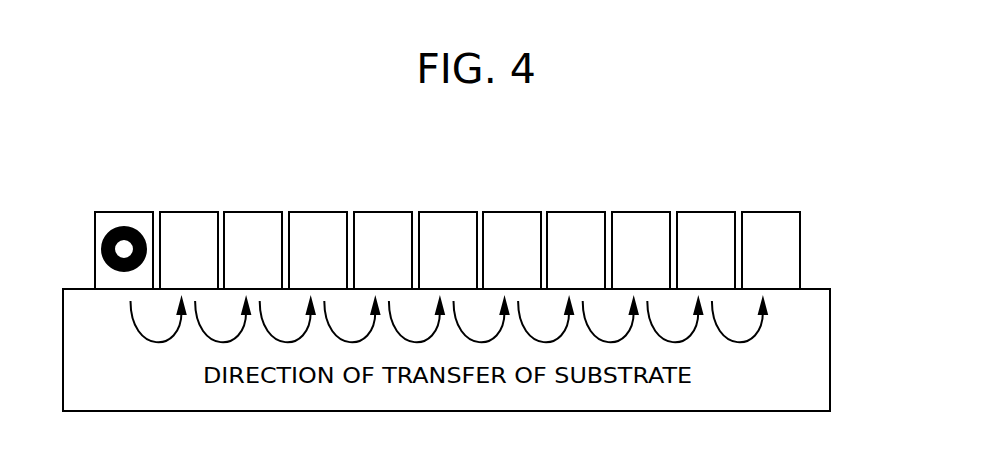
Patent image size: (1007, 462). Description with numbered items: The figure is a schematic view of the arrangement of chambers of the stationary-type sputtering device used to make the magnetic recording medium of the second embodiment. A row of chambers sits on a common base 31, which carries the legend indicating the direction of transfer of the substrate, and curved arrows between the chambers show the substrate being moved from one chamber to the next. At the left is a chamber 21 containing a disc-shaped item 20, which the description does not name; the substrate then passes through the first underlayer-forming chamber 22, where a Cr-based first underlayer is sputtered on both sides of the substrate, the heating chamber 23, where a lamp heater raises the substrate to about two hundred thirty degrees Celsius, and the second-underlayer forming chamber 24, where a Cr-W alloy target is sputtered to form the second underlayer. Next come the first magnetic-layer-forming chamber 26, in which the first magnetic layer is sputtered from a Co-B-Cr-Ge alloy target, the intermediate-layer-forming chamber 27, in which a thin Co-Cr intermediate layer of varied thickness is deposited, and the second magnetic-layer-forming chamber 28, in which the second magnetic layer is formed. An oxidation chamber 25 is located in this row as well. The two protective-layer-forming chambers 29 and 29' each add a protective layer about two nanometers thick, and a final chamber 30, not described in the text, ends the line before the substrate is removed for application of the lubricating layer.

The substrate (disc) 20 is at (104, 234).
The loading chamber 21 is at (124, 218).
The first underlayer-forming chamber 22 is at (189, 218).
The heating chamber 23 is at (253, 218).
The second-underlayer forming chamber 24 is at (318, 218).
The oxidation chamber 25 is at (576, 218).
The first magnetic-layer-forming chamber 26 is at (383, 218).
The intermediate-layer-forming chamber 27 is at (448, 218).
The second magnetic-layer-forming chamber 28 is at (512, 218).
The protective-layer-forming chamber 29 is at (641, 225).
The protective-layer-forming chamber 29' is at (706, 225).
The unloading chamber 30 is at (771, 218).
The transfer path / base 31 is at (810, 351).